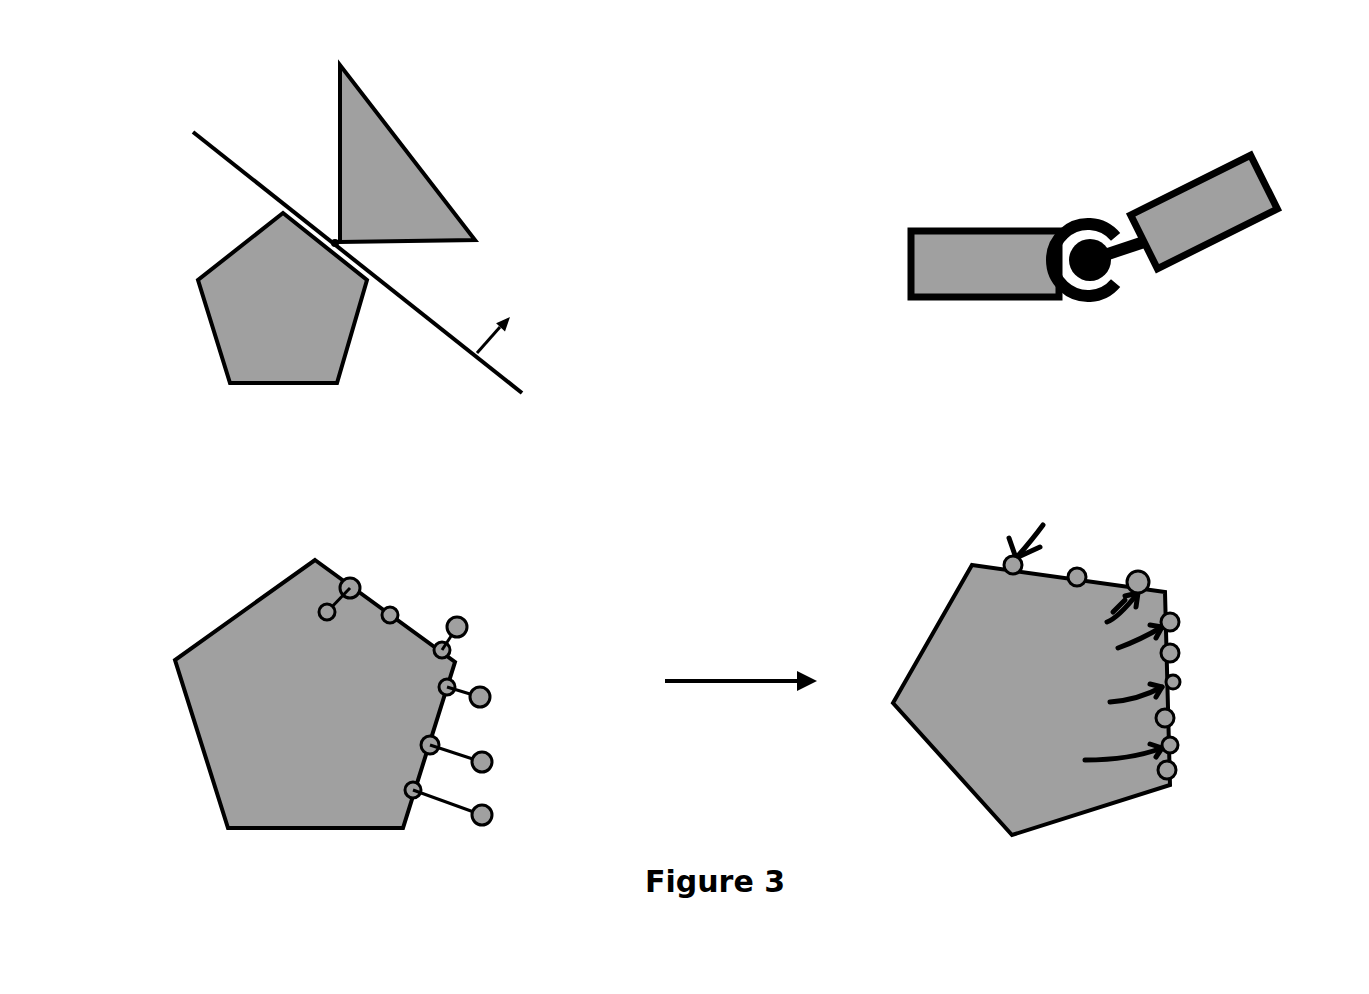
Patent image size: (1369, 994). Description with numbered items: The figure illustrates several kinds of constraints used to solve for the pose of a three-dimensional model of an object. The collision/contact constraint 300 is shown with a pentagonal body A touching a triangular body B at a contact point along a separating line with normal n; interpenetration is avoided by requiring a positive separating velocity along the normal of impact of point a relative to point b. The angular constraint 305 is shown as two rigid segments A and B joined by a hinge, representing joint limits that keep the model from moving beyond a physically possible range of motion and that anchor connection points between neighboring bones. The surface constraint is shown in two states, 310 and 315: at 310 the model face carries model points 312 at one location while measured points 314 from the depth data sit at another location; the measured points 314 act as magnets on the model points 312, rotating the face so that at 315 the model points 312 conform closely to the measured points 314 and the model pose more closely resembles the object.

The collision/contact constraint 300 is at (492, 140).
The angular constraint 305 is at (1073, 165).
The surface constraint (initial, non-conforming state) 310 is at (478, 578).
The model point 312 is at (430, 743).
The measured point 314 is at (487, 813).
The surface constraint (conformed state) 315 is at (1137, 527).